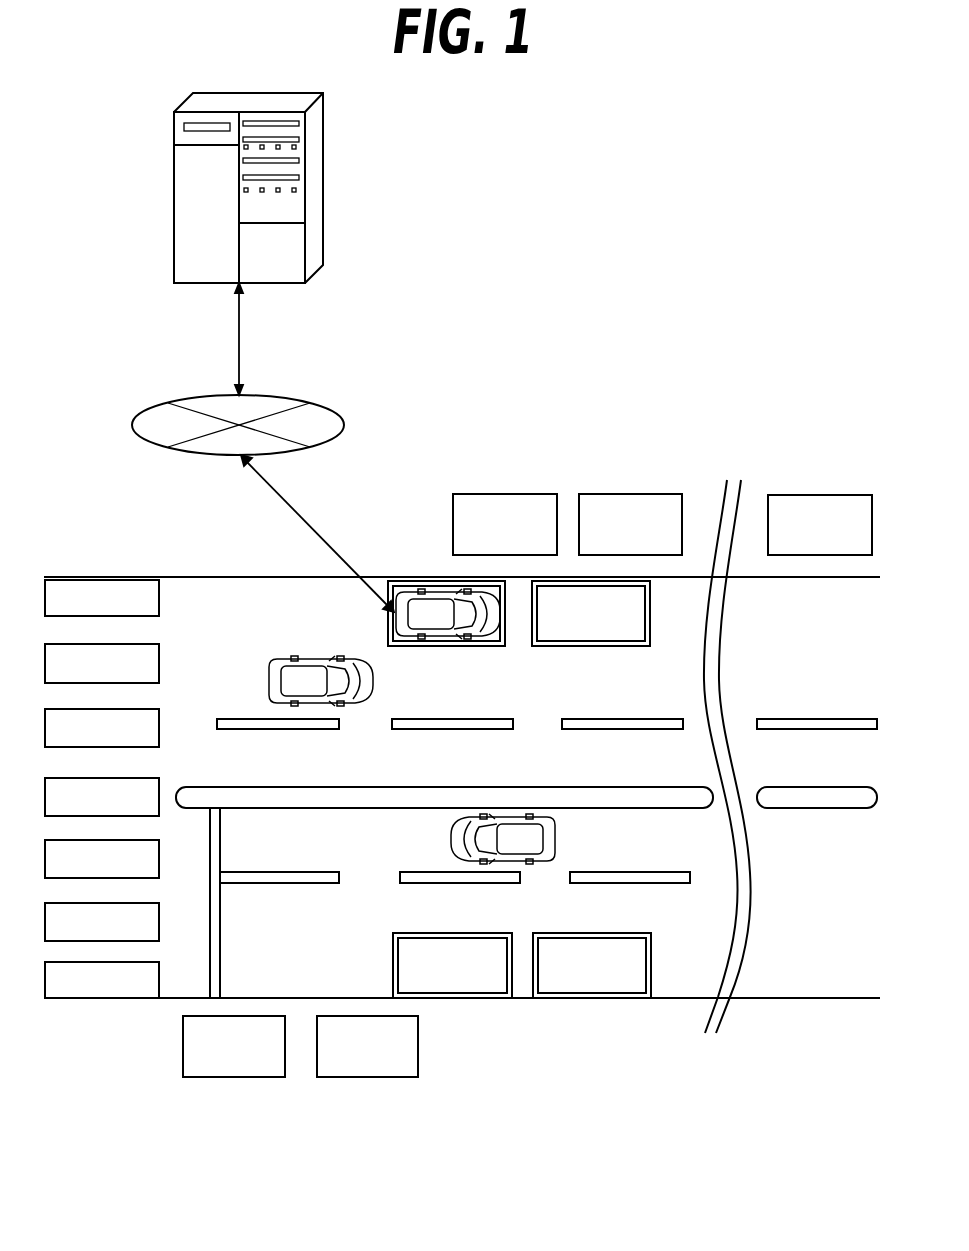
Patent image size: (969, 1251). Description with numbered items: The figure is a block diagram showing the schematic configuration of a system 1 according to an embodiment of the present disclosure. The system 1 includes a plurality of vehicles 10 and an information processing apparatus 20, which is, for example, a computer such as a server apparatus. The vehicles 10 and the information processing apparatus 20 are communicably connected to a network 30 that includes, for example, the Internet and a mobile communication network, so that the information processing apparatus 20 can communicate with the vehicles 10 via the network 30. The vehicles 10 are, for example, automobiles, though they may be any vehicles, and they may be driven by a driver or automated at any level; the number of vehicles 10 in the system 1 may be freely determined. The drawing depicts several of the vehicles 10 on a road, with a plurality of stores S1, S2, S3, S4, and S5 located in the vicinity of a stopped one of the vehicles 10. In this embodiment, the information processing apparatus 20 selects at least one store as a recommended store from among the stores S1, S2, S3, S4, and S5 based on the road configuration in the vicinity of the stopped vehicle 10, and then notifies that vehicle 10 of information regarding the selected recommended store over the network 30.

The system 1 is at (523, 170).
The vehicle 10 is at (418, 590).
The information processing apparatus 20 is at (323, 165).
The network 30 is at (140, 400).
The store S1 is at (505, 494).
The store S2 is at (630, 494).
The store S3 is at (815, 495).
The store S4 is at (235, 1077).
The store S5 is at (368, 1077).